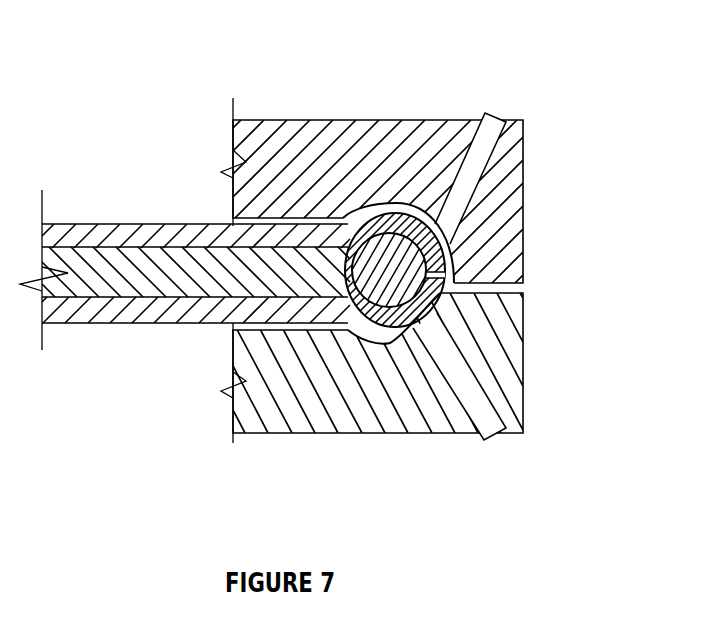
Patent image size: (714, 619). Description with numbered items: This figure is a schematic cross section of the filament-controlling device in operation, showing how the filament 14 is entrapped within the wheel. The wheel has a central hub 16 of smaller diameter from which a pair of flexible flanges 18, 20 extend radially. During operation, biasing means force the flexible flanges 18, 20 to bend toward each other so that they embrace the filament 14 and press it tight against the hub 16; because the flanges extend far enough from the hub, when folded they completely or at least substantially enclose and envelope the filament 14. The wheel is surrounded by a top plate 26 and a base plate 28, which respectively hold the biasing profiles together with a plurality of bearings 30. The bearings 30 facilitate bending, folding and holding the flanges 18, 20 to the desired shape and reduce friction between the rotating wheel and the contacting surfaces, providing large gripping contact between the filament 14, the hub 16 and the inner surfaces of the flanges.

The filament 14 is at (395, 272).
The hub 16 is at (98, 275).
The flexible flange 18 is at (435, 232).
The flexible flange 20 is at (408, 318).
The top plate 26 is at (380, 150).
The base plate 28 is at (423, 416).
The bearings 30 is at (490, 132).